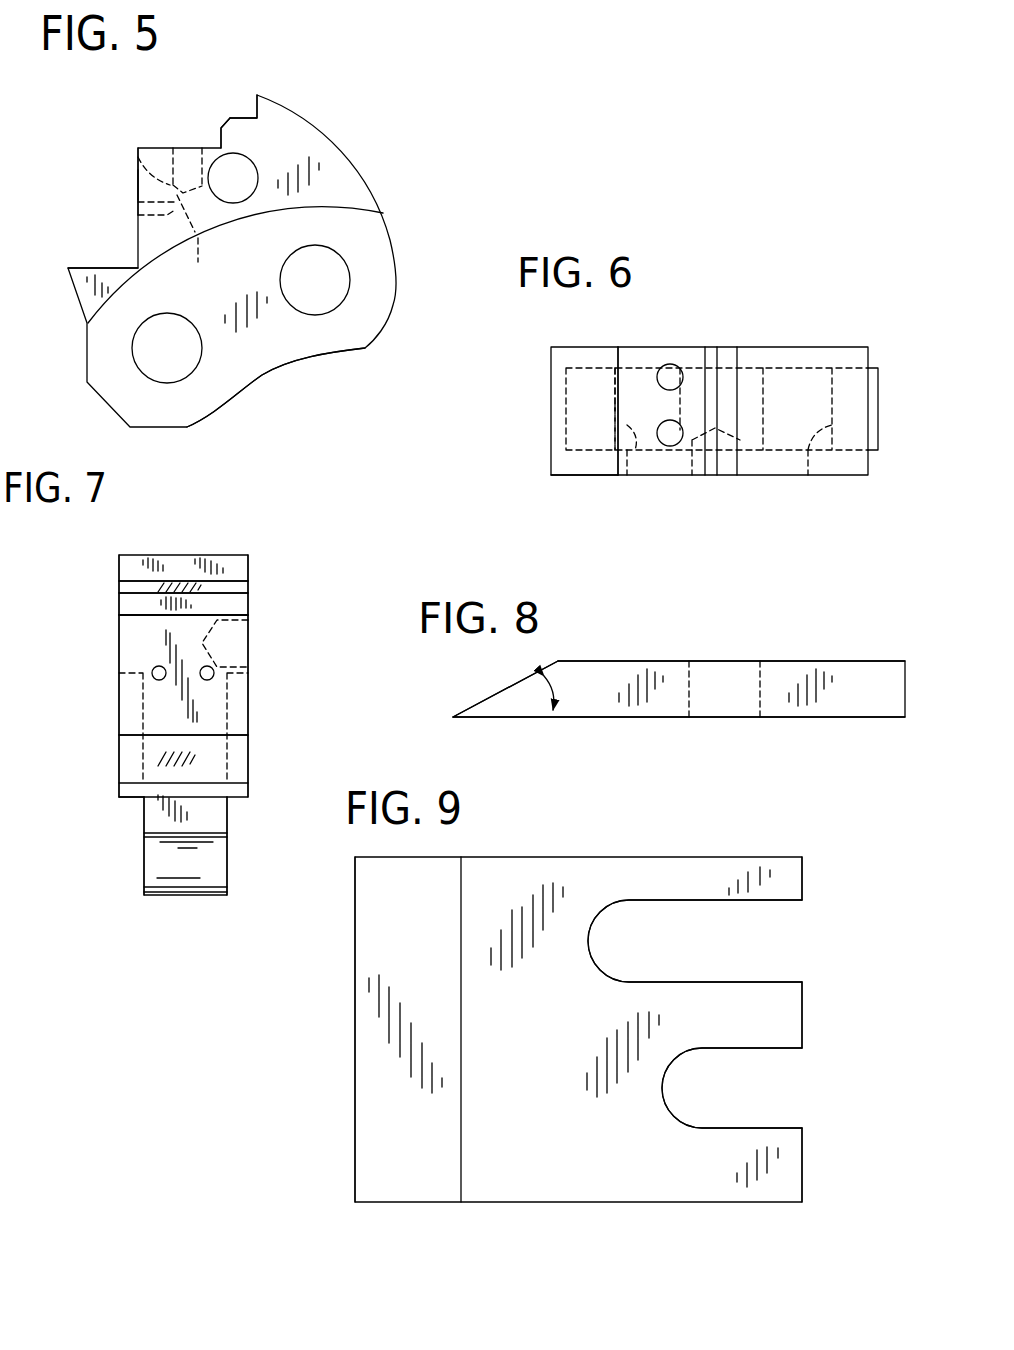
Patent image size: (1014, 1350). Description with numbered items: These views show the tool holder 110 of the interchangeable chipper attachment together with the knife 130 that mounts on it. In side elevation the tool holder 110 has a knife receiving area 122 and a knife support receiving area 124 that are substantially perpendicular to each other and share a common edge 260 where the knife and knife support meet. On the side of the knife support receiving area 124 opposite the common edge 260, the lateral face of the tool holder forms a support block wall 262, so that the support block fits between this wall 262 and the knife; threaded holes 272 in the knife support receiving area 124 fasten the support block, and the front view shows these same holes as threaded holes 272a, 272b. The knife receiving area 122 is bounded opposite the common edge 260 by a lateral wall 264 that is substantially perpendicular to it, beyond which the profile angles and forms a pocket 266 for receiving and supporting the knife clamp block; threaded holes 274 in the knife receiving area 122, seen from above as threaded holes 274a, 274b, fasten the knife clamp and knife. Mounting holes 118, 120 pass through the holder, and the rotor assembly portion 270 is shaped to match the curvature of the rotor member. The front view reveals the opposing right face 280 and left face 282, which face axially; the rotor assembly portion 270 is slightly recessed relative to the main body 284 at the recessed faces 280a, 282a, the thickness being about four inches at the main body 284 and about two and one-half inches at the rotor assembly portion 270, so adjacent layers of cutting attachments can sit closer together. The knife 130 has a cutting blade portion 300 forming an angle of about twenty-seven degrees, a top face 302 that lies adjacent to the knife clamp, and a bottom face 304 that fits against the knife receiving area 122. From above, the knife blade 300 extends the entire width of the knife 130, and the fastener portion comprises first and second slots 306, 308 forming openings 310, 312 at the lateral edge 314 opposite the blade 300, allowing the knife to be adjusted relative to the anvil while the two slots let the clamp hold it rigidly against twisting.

In FIG. 5, the tool holder 110 is at (358, 152).
In FIG. 5, the hole 118 is at (326, 313).
In FIG. 6, the hole 118 is at (808, 475).
In FIG. 5, the hole 120 is at (158, 380).
In FIG. 6, the hole 120 is at (627, 475).
In FIG. 5, the knife receiving area 122 is at (153, 147).
In FIG. 6, the knife receiving area 122 is at (647, 378).
In FIG. 7, the knife receiving area 122 is at (140, 610).
In FIG. 5, the knife support receiving area 124 is at (138, 183).
In FIG. 6, the knife support receiving area 124 is at (616, 410).
In FIG. 7, the knife support receiving area 124 is at (157, 635).
In FIG. 8, the knife 130 is at (630, 645).
In FIG. 9, the knife 130 is at (535, 1213).
In FIG. 5, the common edge 260 is at (138, 147).
In FIG. 6, the common edge 260 is at (616, 377).
In FIG. 5, the support block wall 262 is at (97, 268).
In FIG. 6, the support block wall 262 is at (583, 467).
In FIG. 7, the support block wall 262 is at (157, 730).
In FIG. 5, the lateral wall 264 is at (220, 142).
In FIG. 7, the lateral wall 264 is at (223, 600).
In FIG. 5, the pocket 266 is at (257, 98).
In FIG. 6, the pocket 266 is at (732, 410).
In FIG. 7, the pocket 266 is at (187, 572).
In FIG. 5, the rotor assembly portion 270 is at (253, 385).
In FIG. 6, the rotor assembly portion 270 is at (797, 367).
In FIG. 7, the rotor assembly portion 270 is at (189, 905).
In FIG. 5, the threaded holes 272 is at (216, 223).
In FIG. 7, the threaded hole 272a is at (212, 678).
In FIG. 7, the threaded hole 272b is at (156, 679).
In FIG. 5, the threaded holes 274 is at (120, 152).
In FIG. 6, the threaded hole 274a is at (668, 372).
In FIG. 6, the threaded hole 274b is at (670, 438).
In FIG. 7, the right face 280 is at (258, 598).
In FIG. 5, the recessed face 280a is at (370, 245).
In FIG. 7, the recessed face 280a is at (227, 850).
In FIG. 7, the left face 282 is at (107, 598).
In FIG. 7, the recessed face 282a is at (143, 850).
In FIG. 7, the main body 284 is at (108, 772).
In FIG. 8, the cutting blade portion 300 is at (473, 698).
In FIG. 9, the cutting blade portion 300 is at (348, 1032).
In FIG. 8, the top face 302 is at (833, 661).
In FIG. 8, the bottom face 304 is at (792, 717).
In FIG. 9, the first slot 306 is at (660, 933).
In FIG. 9, the second slot 308 is at (720, 1102).
In FIG. 9, the opening 310 is at (797, 942).
In FIG. 9, the opening 312 is at (797, 1088).
In FIG. 9, the lateral edge 314 is at (802, 1160).